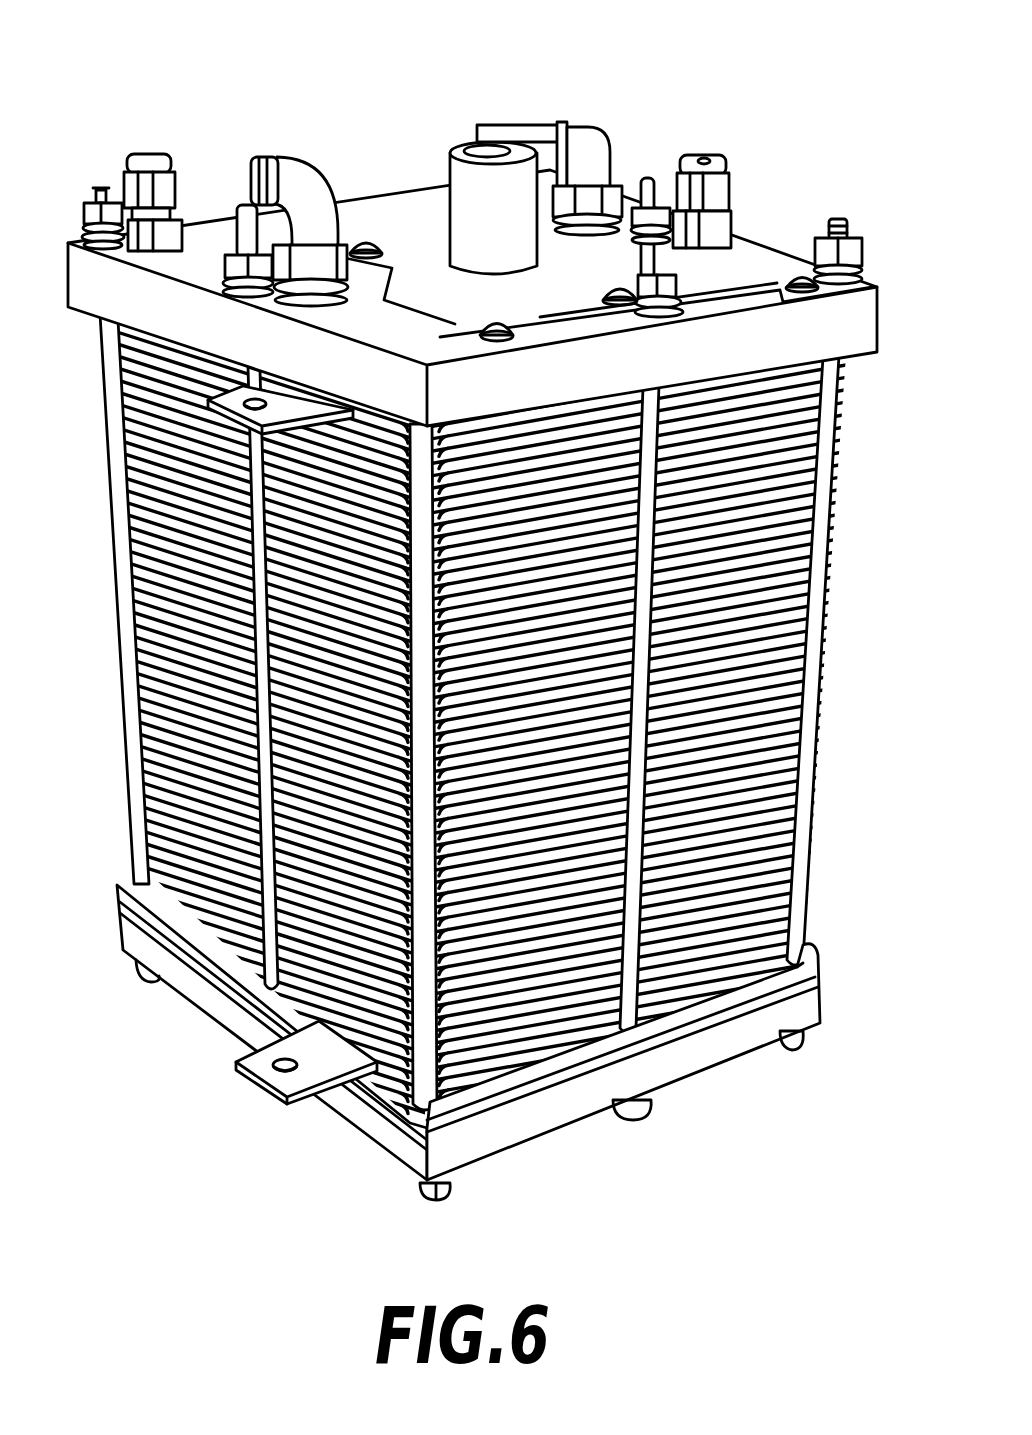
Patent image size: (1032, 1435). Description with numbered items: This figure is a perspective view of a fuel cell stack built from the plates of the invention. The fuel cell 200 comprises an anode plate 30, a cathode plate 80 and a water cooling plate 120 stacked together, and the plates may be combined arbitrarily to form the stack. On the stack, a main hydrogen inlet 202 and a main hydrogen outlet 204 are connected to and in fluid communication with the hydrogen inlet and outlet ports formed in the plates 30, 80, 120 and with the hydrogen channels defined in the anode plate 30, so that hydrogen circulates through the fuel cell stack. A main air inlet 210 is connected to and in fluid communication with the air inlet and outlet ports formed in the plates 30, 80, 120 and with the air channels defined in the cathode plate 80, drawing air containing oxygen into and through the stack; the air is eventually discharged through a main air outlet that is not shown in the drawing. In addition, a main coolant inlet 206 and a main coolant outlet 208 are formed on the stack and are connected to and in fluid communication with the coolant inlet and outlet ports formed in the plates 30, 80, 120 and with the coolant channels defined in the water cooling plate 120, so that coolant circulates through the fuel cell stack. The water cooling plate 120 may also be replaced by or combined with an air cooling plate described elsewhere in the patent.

The main hydrogen inlet 202 is at (173, 152).
The main hydrogen outlet 204 is at (727, 183).
The main coolant inlet 206 is at (540, 130).
The main coolant outlet 208 is at (314, 188).
The main air inlet 210 is at (447, 163).
The anode plate 30 is at (797, 642).
The cathode plate 80 is at (780, 658).
The water cooling plate 120 is at (762, 673).
The fuel cell 200 is at (855, 1232).